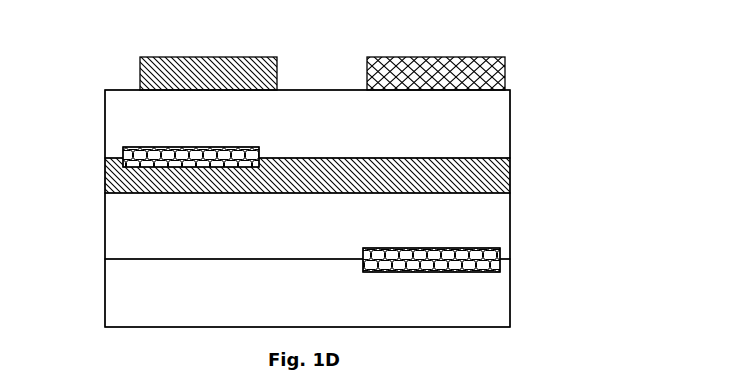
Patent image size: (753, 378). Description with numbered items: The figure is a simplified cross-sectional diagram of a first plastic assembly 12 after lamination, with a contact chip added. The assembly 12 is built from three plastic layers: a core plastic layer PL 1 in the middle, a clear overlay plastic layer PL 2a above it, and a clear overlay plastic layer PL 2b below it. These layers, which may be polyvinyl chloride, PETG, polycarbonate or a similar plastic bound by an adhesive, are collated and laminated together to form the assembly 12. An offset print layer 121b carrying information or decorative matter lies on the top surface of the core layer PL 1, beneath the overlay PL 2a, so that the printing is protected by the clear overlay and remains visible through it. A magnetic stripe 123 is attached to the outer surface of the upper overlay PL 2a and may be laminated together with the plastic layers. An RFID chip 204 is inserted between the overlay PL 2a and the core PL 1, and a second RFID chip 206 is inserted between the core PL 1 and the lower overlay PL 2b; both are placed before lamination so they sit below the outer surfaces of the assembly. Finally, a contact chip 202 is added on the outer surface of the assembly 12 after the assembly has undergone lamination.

The first assembly 12 is at (379, 174).
The magnetic stripe 123 is at (155, 57).
The contact chip 202 is at (385, 57).
The RFID chip 204 is at (123, 149).
The RFID chip 206 is at (478, 260).
The offset print layer 121b is at (510, 173).
The clear overlay plastic layer PL 2a is at (510, 124).
The core plastic layer PL 1 is at (512, 220).
The clear overlay plastic layer PL 2b is at (510, 294).